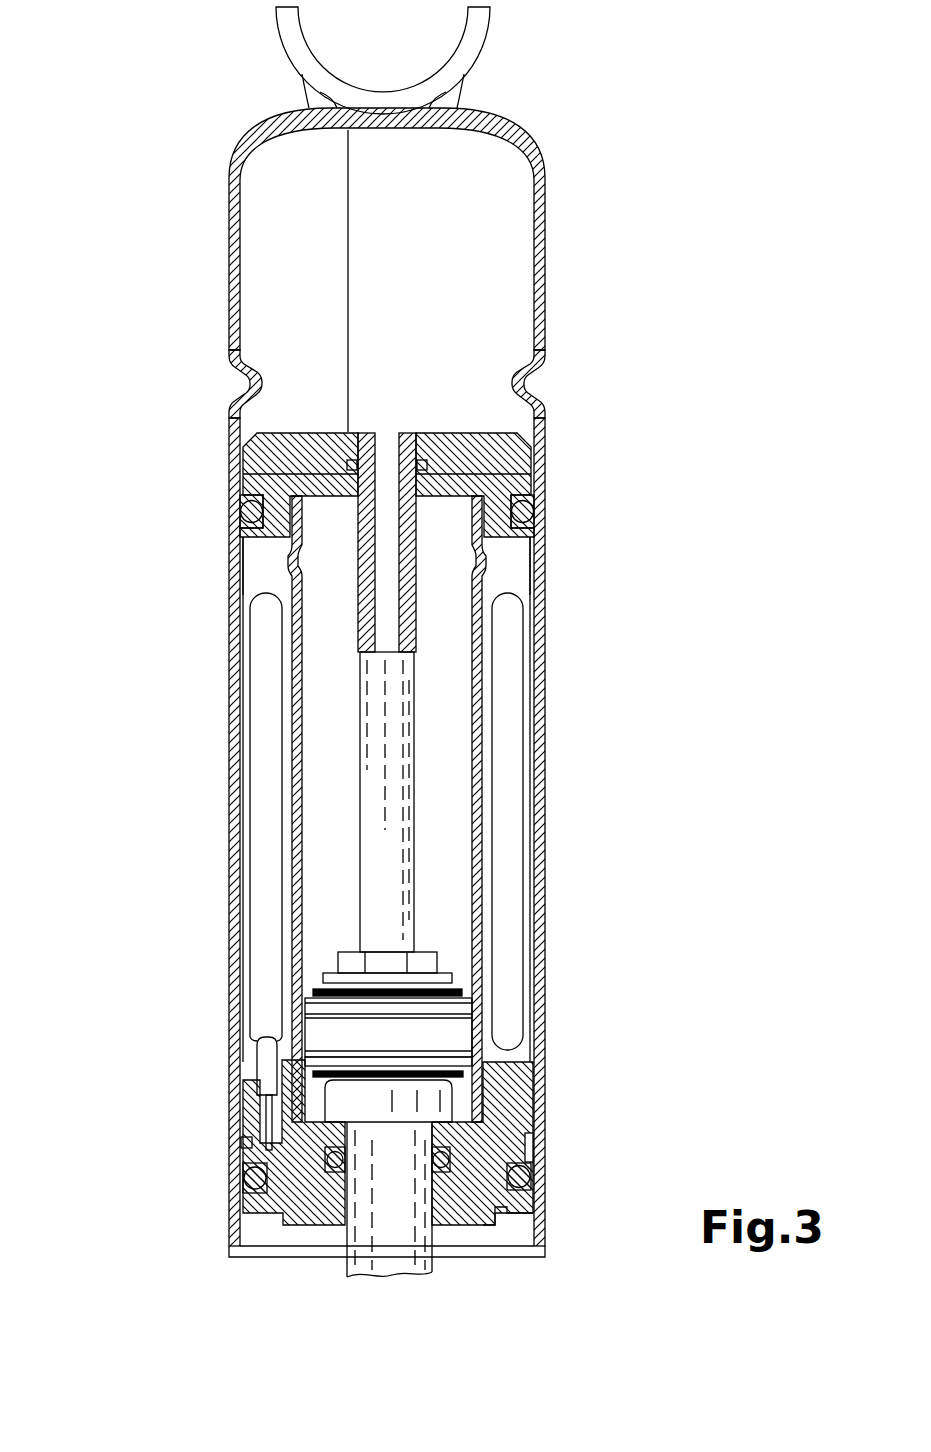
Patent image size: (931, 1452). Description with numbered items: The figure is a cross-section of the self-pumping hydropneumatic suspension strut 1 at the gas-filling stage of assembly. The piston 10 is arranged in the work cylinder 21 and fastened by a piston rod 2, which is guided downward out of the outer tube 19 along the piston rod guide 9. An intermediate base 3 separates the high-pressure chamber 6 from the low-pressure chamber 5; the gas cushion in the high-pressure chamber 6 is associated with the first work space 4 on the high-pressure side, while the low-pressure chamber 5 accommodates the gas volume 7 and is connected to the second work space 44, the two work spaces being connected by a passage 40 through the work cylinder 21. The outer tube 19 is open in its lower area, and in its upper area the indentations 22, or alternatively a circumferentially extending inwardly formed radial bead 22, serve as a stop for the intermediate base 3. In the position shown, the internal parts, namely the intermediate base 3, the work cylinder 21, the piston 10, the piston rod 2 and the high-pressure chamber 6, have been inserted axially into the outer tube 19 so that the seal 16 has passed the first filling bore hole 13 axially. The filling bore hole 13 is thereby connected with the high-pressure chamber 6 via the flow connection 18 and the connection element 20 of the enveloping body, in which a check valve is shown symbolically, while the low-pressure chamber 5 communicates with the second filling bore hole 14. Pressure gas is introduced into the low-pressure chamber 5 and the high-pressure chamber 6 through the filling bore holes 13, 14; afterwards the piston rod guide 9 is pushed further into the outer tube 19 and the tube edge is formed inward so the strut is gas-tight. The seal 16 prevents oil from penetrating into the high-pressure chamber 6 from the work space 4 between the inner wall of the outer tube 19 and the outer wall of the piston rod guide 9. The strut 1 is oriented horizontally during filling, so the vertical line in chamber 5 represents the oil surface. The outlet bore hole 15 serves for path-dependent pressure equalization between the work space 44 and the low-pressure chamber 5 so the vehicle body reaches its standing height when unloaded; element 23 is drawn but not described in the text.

The self-pumping hydropneumatic suspension strut 1 is at (205, 907).
The piston rod 2 is at (348, 1272).
The intermediate base 3 is at (228, 415).
The first work space 4 is at (518, 556).
The low-pressure chamber 5 is at (498, 264).
The high-pressure chamber 6 is at (265, 698).
The gas volume 7 is at (253, 215).
The piston rod guide 9 is at (497, 1207).
The piston 10 is at (320, 1013).
The first filling bore hole 13 is at (233, 1142).
The second filling bore hole 14 is at (230, 470).
The outlet bore hole 15 is at (386, 846).
The seal 16 is at (532, 1118).
The flow connection 18 is at (243, 1143).
The outer tube 19 is at (547, 923).
The connection element 20 is at (267, 1063).
The work cylinder 21 is at (482, 765).
The indentations 22 is at (250, 380).
The bore 23 is at (233, 1035).
The passage 40 is at (530, 525).
The second work space 44 is at (458, 603).